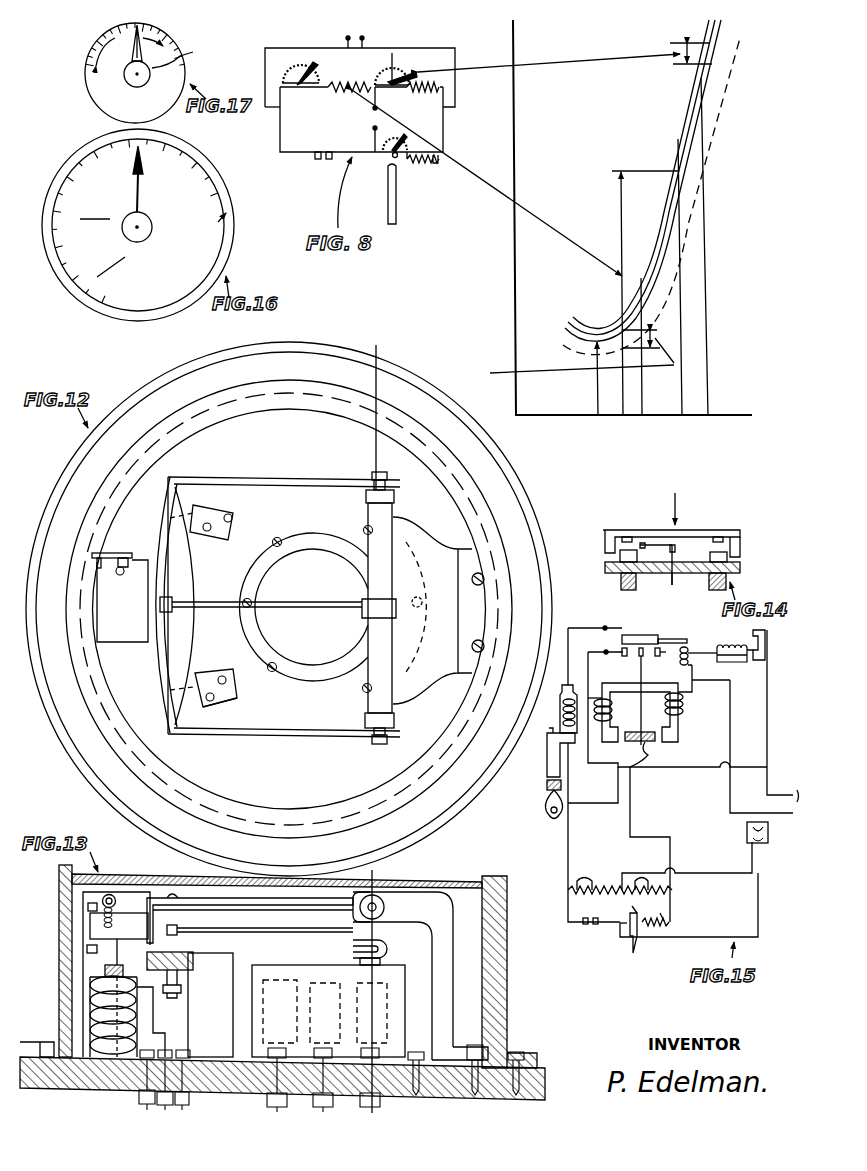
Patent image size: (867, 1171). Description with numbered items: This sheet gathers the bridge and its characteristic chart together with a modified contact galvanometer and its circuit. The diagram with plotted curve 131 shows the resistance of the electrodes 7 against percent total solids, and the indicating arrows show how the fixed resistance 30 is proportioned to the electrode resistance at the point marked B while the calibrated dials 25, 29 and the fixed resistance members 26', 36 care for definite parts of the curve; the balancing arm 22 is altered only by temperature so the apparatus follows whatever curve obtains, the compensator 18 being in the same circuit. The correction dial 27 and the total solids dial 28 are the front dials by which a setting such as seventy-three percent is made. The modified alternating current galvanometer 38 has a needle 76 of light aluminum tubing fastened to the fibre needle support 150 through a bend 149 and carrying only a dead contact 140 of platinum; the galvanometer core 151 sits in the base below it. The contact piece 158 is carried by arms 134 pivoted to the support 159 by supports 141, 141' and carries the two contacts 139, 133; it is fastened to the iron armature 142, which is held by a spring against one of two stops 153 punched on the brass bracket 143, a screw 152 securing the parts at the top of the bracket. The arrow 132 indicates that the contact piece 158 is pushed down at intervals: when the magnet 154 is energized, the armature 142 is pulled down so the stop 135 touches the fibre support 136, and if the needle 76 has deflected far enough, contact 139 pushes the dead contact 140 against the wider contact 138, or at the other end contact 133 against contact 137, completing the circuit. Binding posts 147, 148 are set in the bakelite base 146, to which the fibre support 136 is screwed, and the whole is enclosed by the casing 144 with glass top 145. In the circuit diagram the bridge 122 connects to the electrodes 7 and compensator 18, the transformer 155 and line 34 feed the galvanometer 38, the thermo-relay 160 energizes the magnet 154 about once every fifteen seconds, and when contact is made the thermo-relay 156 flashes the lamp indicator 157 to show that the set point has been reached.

In FIG. 8, the electrodes 7 is at (322, 169).
In FIG. 15, the electrodes 7 is at (588, 933).
In FIG. 8, the compensator 18 is at (374, 194).
In FIG. 15, the compensator 18 is at (644, 937).
In FIG. 8, the balancing arm 22 is at (395, 133).
In FIG. 8, the calibrated resistance dial 25 is at (396, 54).
In FIG. 8, the fixed resistance member 26' is at (423, 93).
In FIG. 17, the correction dial 27 is at (114, 73).
In FIG. 16, the total solids dial 28 is at (138, 225).
In FIG. 8, the calibrated resistance dial 29 is at (300, 88).
In FIG. 8, the fixed resistance 30 is at (349, 97).
In FIG. 15, the power line 34 is at (793, 781).
In FIG. 8, the fixed resistance member 36 is at (423, 170).
In FIG. 12, the alternating current galvanometer 38 is at (305, 609).
In FIG. 15, the alternating current galvanometer 38 is at (651, 725).
In FIG. 13, the alternating current galvanometer 38 is at (328, 1011).
In FIG. 12, the needle 76 is at (284, 619).
In FIG. 14, the needle 76 is at (685, 564).
In FIG. 15, the needle 76 is at (636, 700).
In FIG. 13, the needle 76 is at (313, 943).
In FIG. 15, the bridge 122 is at (620, 897).
In FIG. 8, the resistance curve 131 is at (625, 237).
In FIG. 14, the arrow 132 is at (688, 514).
In FIG. 14, the contact 133 is at (725, 535).
In FIG. 12, the arms 134 is at (278, 607).
In FIG. 14, the arms 134 is at (600, 532).
In FIG. 13, the arms 134 is at (253, 895).
In FIG. 14, the stop 135 is at (745, 562).
In FIG. 12, the fibre support 136 is at (212, 673).
In FIG. 14, the fibre support 136 is at (690, 580).
In FIG. 13, the fibre support 136 is at (210, 1005).
In FIG. 12, the contact 137 is at (200, 706).
In FIG. 14, the contact 137 is at (742, 575).
In FIG. 15, the contact 137 is at (663, 664).
In FIG. 12, the contact 138 is at (200, 509).
In FIG. 14, the contact 138 is at (618, 580).
In FIG. 15, the contact 138 is at (609, 664).
In FIG. 13, the contact 138 is at (182, 956).
In FIG. 14, the contact 139 is at (627, 537).
In FIG. 13, the contact 139 is at (178, 912).
In FIG. 12, the dead contact 140 is at (176, 605).
In FIG. 14, the dead contact 140 is at (647, 545).
In FIG. 15, the dead contact 140 is at (637, 657).
In FIG. 13, the dead contact 140 is at (183, 923).
In FIG. 12, the supports 141 is at (363, 536).
In FIG. 12, the supports 141' is at (360, 749).
In FIG. 12, the iron armature 142 is at (122, 601).
In FIG. 15, the iron armature 142 is at (670, 635).
In FIG. 13, the iron armature 142 is at (120, 939).
In FIG. 12, the bracket 143 is at (116, 553).
In FIG. 13, the bracket 143 is at (101, 892).
In FIG. 12, the casing 144 is at (62, 746).
In FIG. 13, the casing 144 is at (251, 961).
In FIG. 13, the glass top 145 is at (388, 880).
In FIG. 13, the base 146 is at (445, 1096).
In FIG. 13, the binding posts 147 is at (323, 1089).
In FIG. 13, the binding posts 148 is at (164, 1091).
In FIG. 13, the bend 149 is at (386, 937).
In FIG. 13, the needle support 150 is at (382, 950).
In FIG. 13, the core 151 is at (375, 1004).
In FIG. 13, the screw 152 is at (114, 906).
In FIG. 13, the stops 153 is at (83, 950).
In FIG. 15, the magnet 154 is at (686, 645).
In FIG. 13, the magnet 154 is at (90, 1000).
In FIG. 15, the transformer 155 is at (734, 836).
In FIG. 15, the thermo-relay 156 is at (552, 727).
In FIG. 15, the lamp indicator 157 is at (534, 799).
In FIG. 12, the contact piece 158 is at (136, 684).
In FIG. 14, the contact piece 158 is at (692, 503).
In FIG. 15, the contact piece 158 is at (632, 635).
In FIG. 12, the support 159 is at (438, 610).
In FIG. 13, the support 159 is at (440, 980).
In FIG. 15, the thermo-relay 160 is at (767, 640).